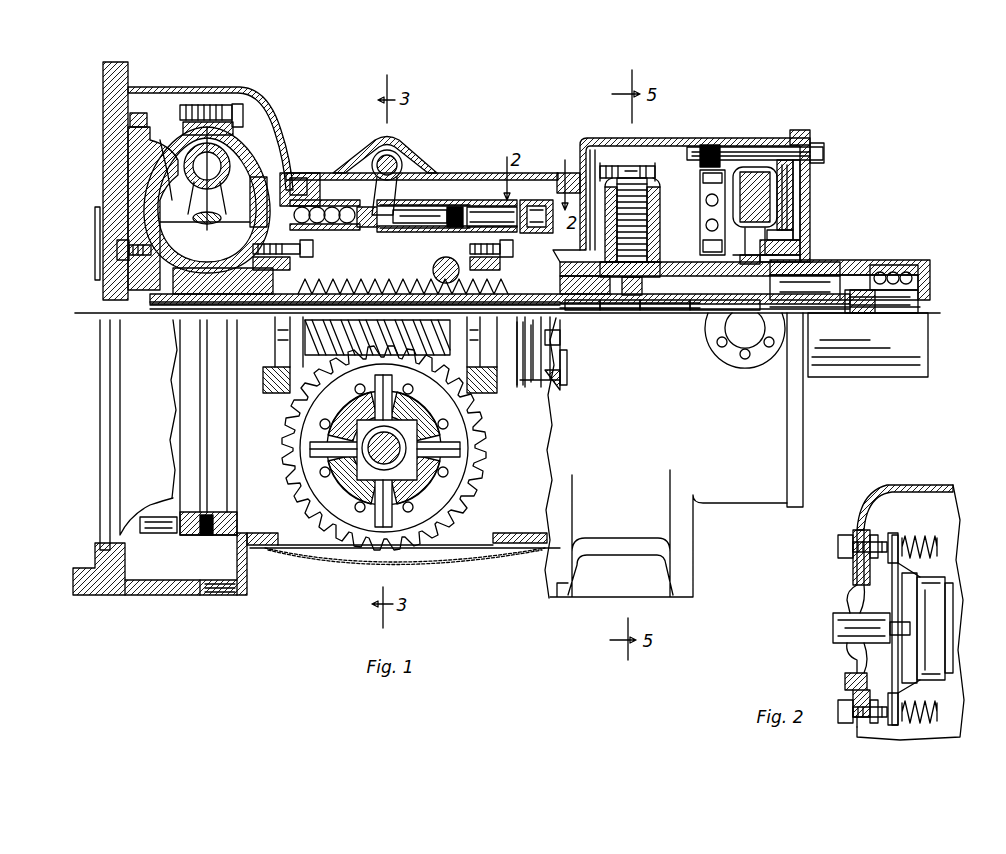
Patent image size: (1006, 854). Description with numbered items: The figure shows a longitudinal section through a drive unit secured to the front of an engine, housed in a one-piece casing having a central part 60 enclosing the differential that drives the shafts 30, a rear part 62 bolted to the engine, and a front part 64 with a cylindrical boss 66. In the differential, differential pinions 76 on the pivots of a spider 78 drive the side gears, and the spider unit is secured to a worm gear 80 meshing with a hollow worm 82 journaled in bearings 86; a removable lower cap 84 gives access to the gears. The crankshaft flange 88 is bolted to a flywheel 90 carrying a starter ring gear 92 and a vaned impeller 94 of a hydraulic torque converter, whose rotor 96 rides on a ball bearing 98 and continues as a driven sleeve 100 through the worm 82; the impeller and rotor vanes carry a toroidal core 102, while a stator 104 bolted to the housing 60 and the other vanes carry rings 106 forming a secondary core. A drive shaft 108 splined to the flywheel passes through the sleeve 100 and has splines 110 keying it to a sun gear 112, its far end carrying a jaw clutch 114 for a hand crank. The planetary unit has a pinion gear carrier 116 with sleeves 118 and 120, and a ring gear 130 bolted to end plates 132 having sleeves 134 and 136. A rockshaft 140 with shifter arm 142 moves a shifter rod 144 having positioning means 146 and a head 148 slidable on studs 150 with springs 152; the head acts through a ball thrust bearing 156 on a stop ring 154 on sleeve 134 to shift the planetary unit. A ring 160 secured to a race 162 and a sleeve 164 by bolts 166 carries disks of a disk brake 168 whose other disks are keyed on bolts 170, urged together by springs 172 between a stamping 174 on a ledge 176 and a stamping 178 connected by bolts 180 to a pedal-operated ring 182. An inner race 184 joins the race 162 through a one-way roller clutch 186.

In FIG. 1, the shafts 30 is at (408, 440).
In FIG. 1, the central part of housing 60 is at (540, 540).
In FIG. 1, the rear part of housing 62 is at (165, 595).
In FIG. 1, the front part of housing 64 is at (775, 440).
In FIG. 1, the cylindrical boss 66 is at (910, 380).
In FIG. 1, the differential pinions 76 is at (430, 415).
In FIG. 1, the spider 78 is at (462, 450).
In FIG. 1, the driven worm gear 80 is at (408, 553).
In FIG. 1, the hollow worm 82 is at (400, 277).
In FIG. 1, the removable lower cap 84 is at (340, 563).
In FIG. 1, the bearings 86 is at (290, 268).
In FIG. 1, the flange 88 is at (118, 266).
In FIG. 1, the flywheel 90 is at (135, 185).
In FIG. 1, the starter ring gear 92 is at (138, 113).
In FIG. 1, the vaned impeller 94 is at (235, 135).
In FIG. 1, the vaned rotor 96 is at (157, 148).
In FIG. 1, the ball bearing 98 is at (100, 330).
In FIG. 1, the driven sleeve 100 is at (206, 300).
In FIG. 1, the toroidal core 102 is at (225, 160).
In FIG. 1, the vaned stator 104 is at (175, 232).
In FIG. 1, the rings 106 is at (205, 225).
In FIG. 1, the drive shaft 108 is at (185, 318).
In FIG. 1, the splines 110 is at (666, 313).
In FIG. 1, the sun gear 112 is at (628, 313).
In FIG. 1, the jaw clutch 114 is at (905, 305).
In FIG. 1, the pinion gear carrier 116 is at (648, 210).
In FIG. 1, the sleeve 118 is at (655, 250).
In FIG. 1, the sleeve 120 is at (704, 313).
In FIG. 1, the ring gear 130 is at (620, 170).
In FIG. 1, the end plates 132 is at (622, 137).
In FIG. 1, the sleeve 134 is at (575, 313).
In FIG. 1, the sleeve 136 is at (690, 252).
In FIG. 1, the rockshaft 140 is at (378, 152).
In FIG. 1, the shifter arm 142 is at (400, 160).
In FIG. 1, the shifter rod 144 is at (470, 200).
In FIG. 2, the shifter rod 144 is at (845, 613).
In FIG. 1, the spring-ball and notch positioning means 146 is at (370, 205).
In FIG. 1, the head 148 is at (735, 185).
In FIG. 2, the head 148 is at (860, 600).
In FIG. 2, the studs 150 is at (858, 530).
In FIG. 1, the springs 152 is at (562, 335).
In FIG. 2, the springs 152 is at (922, 536).
In FIG. 1, the stop ring 154 is at (567, 380).
In FIG. 1, the ball thrust bearing 156 is at (540, 200).
In FIG. 1, the ring 160 is at (712, 230).
In FIG. 1, the race 162 is at (805, 220).
In FIG. 1, the sleeve 164 is at (885, 262).
In FIG. 1, the bolts 166 is at (790, 255).
In FIG. 1, the disk brake 168 is at (805, 200).
In FIG. 1, the bolts 170 is at (725, 147).
In FIG. 1, the springs 172 is at (805, 150).
In FIG. 1, the annular channel-section stamping 174 is at (800, 130).
In FIG. 1, the ledge 176 is at (785, 137).
In FIG. 1, the stamping 178 is at (805, 180).
In FIG. 1, the bolts 180 is at (805, 165).
In FIG. 1, the ring 182 is at (710, 145).
In FIG. 1, the inner race 184 is at (848, 262).
In FIG. 1, the one-way roller clutch 186 is at (800, 242).